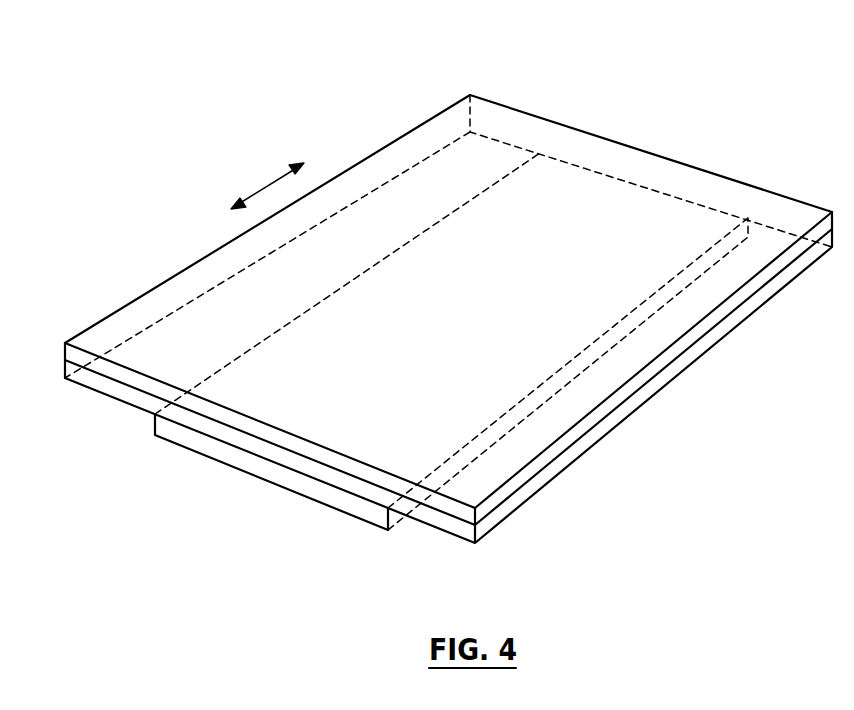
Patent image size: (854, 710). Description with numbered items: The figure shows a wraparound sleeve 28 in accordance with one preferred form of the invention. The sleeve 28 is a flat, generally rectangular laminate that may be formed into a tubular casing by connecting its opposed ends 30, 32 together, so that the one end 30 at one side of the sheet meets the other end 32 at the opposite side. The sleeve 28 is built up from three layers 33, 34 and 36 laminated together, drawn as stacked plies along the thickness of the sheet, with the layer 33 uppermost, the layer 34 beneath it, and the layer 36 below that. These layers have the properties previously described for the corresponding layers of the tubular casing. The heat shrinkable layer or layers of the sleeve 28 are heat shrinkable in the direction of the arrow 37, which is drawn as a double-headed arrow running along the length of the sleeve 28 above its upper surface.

The wraparound sleeve 28 is at (132, 283).
The opposed end 30 is at (650, 150).
The opposed end 32 is at (265, 423).
The layer 33 is at (64, 345).
The layer 34 is at (79, 375).
The layer 36 is at (202, 445).
The arrow 37 is at (257, 193).